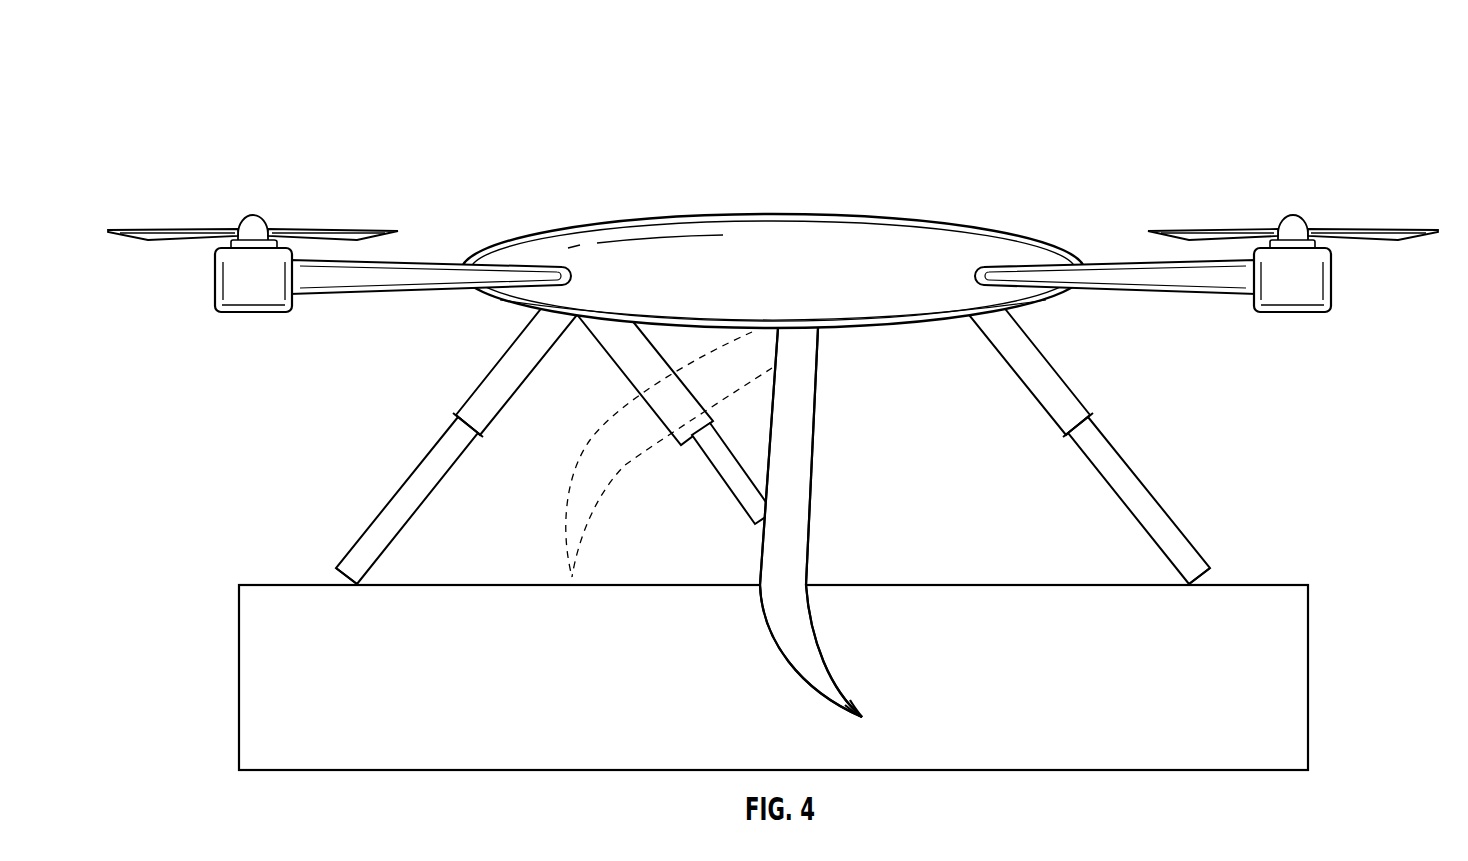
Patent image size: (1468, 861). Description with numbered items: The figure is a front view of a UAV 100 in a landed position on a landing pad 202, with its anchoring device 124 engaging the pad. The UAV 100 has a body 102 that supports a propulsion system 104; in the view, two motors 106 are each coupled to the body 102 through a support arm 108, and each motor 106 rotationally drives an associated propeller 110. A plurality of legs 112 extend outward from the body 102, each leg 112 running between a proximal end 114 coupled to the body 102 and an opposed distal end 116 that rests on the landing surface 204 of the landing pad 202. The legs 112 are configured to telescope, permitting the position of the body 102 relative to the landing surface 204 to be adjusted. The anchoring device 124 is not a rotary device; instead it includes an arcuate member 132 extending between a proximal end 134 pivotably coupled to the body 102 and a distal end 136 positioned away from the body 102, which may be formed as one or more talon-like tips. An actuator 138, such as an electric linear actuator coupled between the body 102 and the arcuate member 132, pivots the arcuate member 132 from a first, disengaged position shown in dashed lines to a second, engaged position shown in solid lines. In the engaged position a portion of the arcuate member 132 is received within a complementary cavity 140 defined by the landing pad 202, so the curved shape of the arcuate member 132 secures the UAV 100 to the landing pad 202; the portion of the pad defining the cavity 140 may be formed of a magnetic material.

The UAV 100 is at (306, 76).
The body 102 is at (859, 216).
The propulsion system 104 is at (335, 180).
The motor 106 is at (243, 313).
The support arm 108 is at (365, 296).
The propeller 110 is at (143, 233).
The leg 112 is at (412, 468).
The proximal end 114 is at (502, 326).
The distal end 116 is at (326, 541).
The anchoring device 124 is at (730, 677).
The arcuate member 132 is at (812, 490).
The proximal end 134 is at (849, 377).
The distal end 136 is at (884, 738).
The actuator 138 is at (630, 378).
The cavity 140 is at (826, 660).
The landing pad 202 is at (1000, 582).
The landing surface 204 is at (1260, 584).